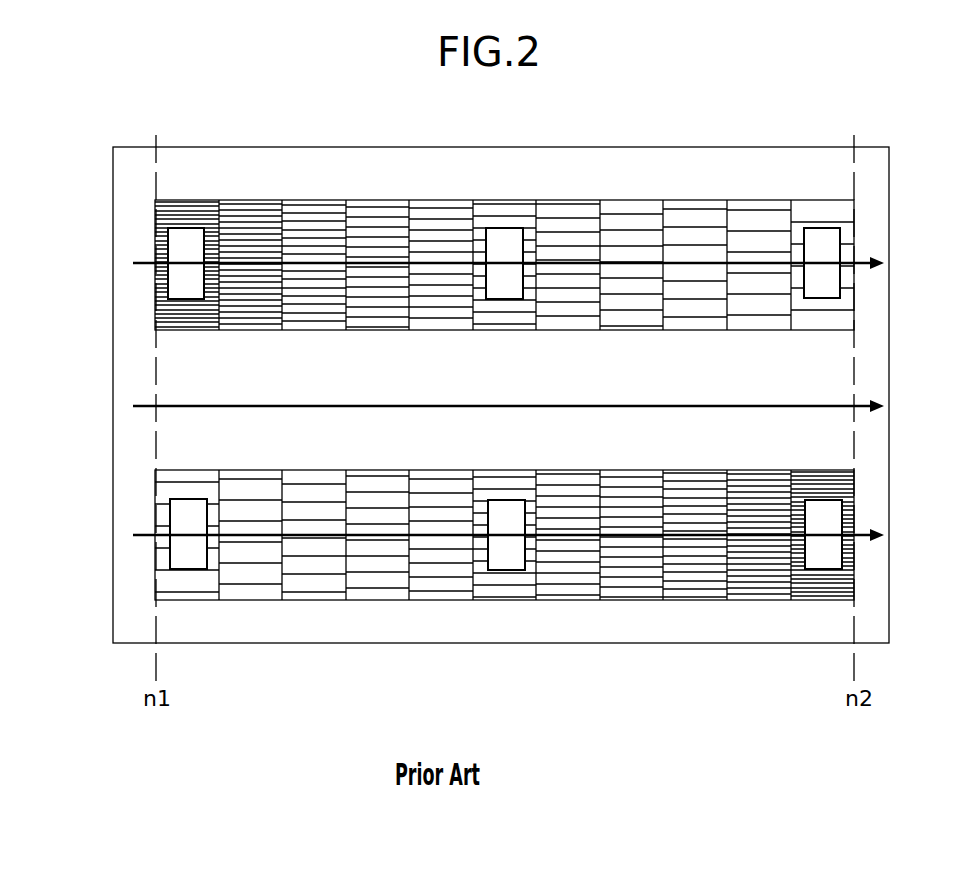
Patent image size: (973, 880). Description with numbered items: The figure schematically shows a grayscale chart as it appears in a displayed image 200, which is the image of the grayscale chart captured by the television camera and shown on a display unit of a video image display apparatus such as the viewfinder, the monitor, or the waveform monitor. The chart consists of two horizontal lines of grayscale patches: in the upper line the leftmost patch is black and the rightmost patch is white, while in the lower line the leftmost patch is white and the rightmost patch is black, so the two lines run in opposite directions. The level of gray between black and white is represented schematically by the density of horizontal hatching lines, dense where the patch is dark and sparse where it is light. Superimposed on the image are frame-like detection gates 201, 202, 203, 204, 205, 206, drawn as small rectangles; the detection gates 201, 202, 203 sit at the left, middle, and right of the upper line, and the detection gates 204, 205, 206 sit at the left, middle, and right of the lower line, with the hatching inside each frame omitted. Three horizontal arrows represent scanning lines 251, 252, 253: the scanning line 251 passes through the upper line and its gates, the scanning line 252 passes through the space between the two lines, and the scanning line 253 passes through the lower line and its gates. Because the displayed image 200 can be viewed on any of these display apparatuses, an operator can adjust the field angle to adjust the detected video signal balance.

The displayed image 200 is at (788, 147).
The detection gate 201 is at (185, 247).
The detection gate 202 is at (504, 253).
The detection gate 203 is at (822, 247).
The detection gate 204 is at (187, 518).
The detection gate 205 is at (506, 550).
The detection gate 206 is at (823, 520).
The scanning line 251 is at (145, 264).
The scanning line 252 is at (147, 407).
The scanning line 253 is at (147, 537).